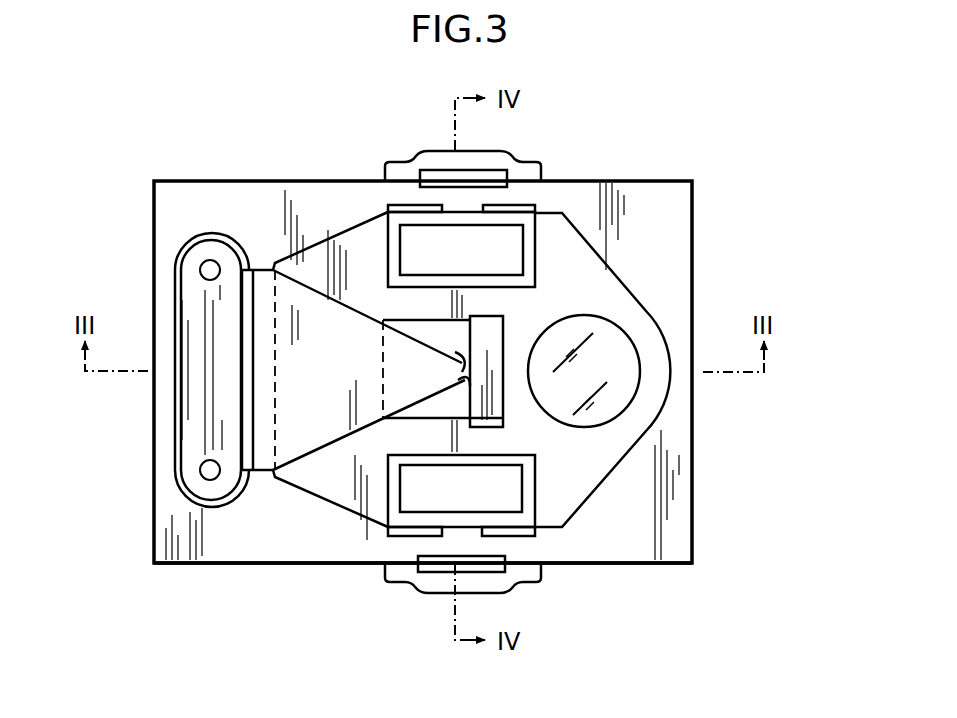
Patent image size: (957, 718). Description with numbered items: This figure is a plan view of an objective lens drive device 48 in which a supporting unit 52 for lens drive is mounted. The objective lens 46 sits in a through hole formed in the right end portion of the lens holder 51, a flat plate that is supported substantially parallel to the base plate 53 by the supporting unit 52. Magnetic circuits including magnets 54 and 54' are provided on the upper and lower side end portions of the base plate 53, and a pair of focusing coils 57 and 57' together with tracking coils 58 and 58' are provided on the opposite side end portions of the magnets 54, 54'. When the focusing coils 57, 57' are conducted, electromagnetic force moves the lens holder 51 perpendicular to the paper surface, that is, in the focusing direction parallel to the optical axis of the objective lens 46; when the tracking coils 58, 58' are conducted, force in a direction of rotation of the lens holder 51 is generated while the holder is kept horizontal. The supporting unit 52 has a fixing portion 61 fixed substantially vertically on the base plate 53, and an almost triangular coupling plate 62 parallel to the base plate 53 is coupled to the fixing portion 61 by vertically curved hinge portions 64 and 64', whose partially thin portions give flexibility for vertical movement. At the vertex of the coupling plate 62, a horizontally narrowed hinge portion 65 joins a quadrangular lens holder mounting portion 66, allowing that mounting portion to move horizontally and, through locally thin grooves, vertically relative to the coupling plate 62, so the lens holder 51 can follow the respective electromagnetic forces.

The objective lens drive device 48 is at (122, 205).
The base plate 53 is at (165, 531).
The fixing portion 61 is at (183, 327).
The supporting unit 52 is at (176, 428).
The hinge portion 64 is at (235, 235).
The hinge portion 64' is at (240, 504).
The coupling plate 62 is at (318, 433).
The hinge portion 65 is at (473, 335).
The lens holder mounting portion 66 is at (502, 415).
The focusing coil 57 is at (517, 249).
The focusing coil 57' is at (514, 491).
The tracking coil 58 is at (454, 173).
The tracking coil 58' is at (471, 574).
The magnet 54 is at (463, 141).
The magnet 54' is at (463, 608).
The lens holder 51 is at (635, 322).
The objective lens 46 is at (632, 393).